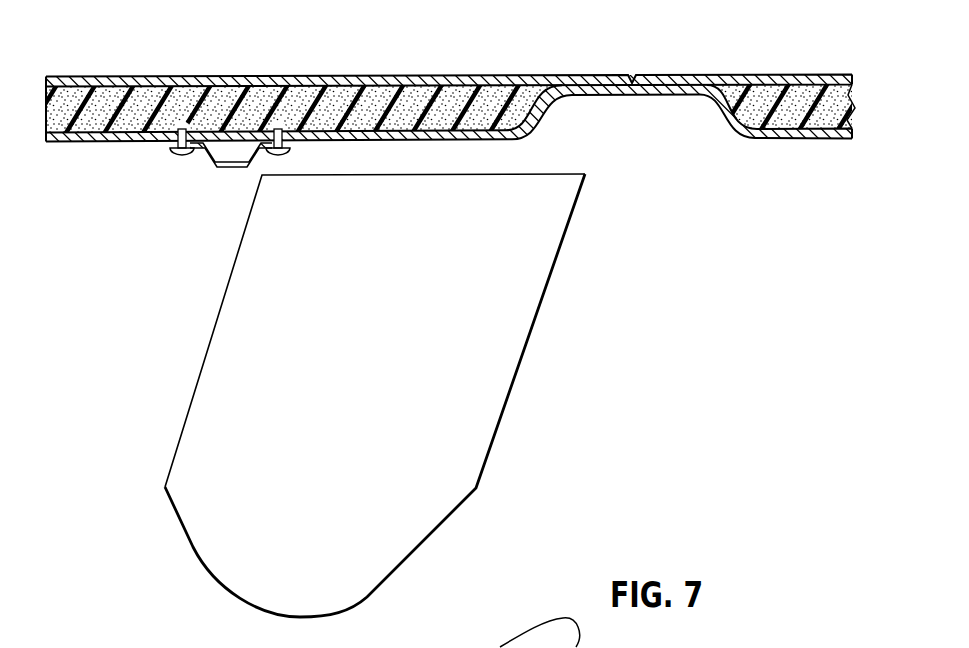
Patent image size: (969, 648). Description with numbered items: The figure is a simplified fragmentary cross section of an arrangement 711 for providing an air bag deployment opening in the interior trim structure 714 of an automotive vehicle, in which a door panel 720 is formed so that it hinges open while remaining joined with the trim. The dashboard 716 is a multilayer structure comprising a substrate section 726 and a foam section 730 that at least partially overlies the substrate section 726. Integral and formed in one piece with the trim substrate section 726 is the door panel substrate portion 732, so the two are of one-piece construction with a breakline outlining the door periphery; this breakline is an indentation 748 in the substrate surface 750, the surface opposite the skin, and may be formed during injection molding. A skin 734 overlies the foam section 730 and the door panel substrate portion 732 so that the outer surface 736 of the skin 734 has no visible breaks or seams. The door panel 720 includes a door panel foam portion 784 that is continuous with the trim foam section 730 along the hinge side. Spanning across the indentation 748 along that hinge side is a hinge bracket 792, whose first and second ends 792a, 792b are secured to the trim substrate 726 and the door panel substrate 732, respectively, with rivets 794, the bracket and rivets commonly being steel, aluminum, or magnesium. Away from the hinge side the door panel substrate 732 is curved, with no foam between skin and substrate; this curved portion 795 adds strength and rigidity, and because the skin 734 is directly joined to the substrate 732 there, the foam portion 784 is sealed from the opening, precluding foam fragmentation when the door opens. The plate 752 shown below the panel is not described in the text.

The arrangement 711 is at (476, 124).
The interior trim structure 714 is at (127, 70).
The dashboard 716 is at (790, 74).
The door panel 720 is at (415, 103).
The substrate section 726 is at (771, 139).
The foam section 730 is at (818, 115).
The door panel substrate portion 732 is at (445, 141).
The skin 734 is at (230, 77).
The outer surface 736 is at (288, 77).
The indentation 748 is at (222, 137).
The substrate surface 750 is at (80, 143).
The plate 752 is at (363, 367).
The door panel foam portion 784 is at (373, 99).
The hinge bracket 792 is at (233, 168).
The first end 792a is at (169, 144).
The second end 792b is at (296, 144).
The rivets 794 is at (182, 155).
The curved portion 795 is at (551, 117).